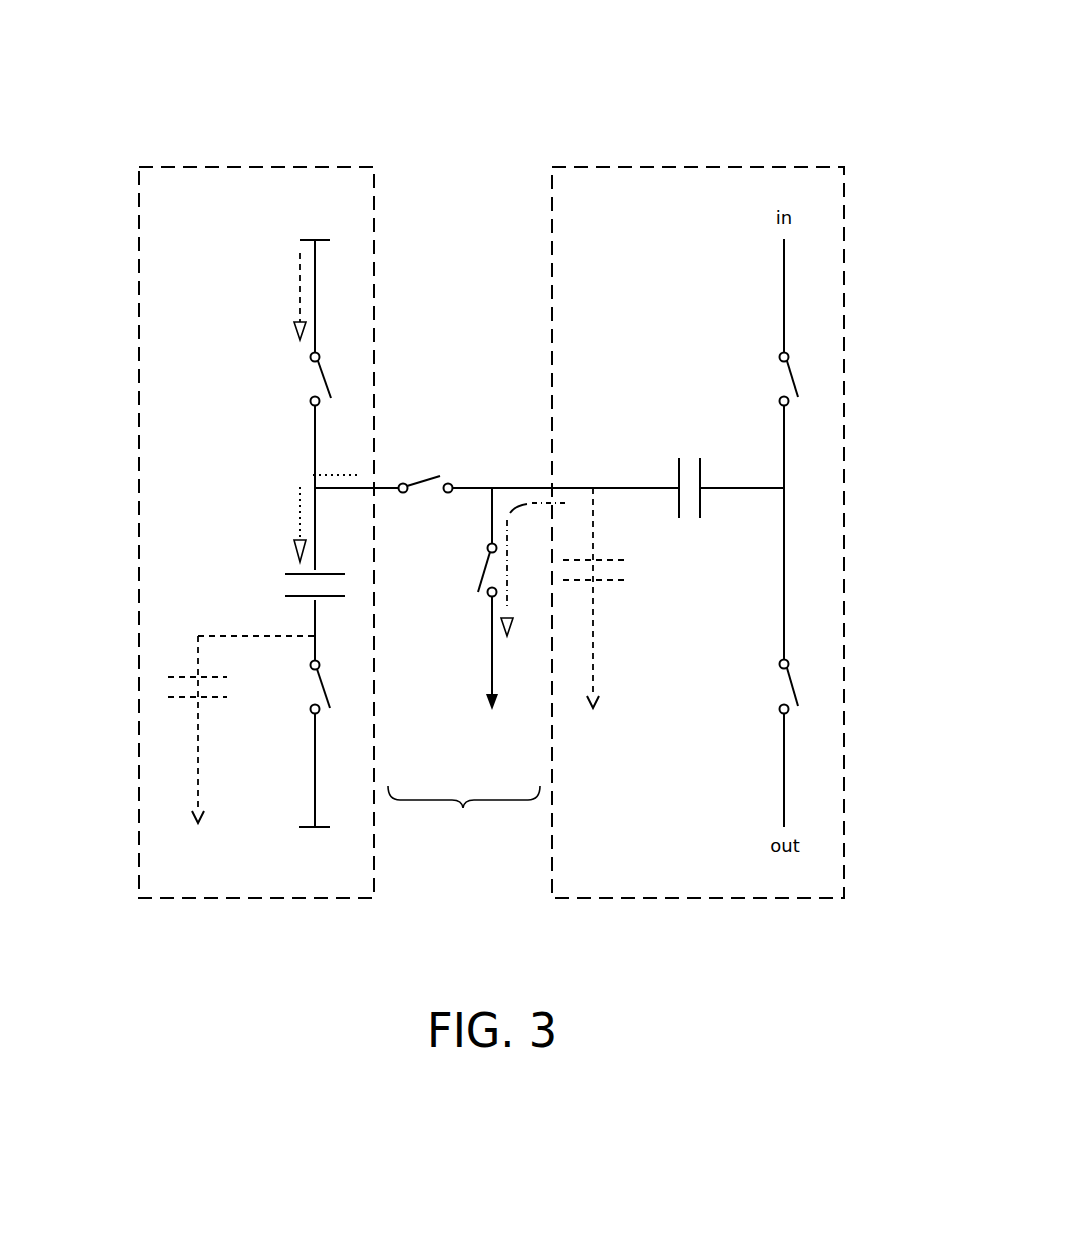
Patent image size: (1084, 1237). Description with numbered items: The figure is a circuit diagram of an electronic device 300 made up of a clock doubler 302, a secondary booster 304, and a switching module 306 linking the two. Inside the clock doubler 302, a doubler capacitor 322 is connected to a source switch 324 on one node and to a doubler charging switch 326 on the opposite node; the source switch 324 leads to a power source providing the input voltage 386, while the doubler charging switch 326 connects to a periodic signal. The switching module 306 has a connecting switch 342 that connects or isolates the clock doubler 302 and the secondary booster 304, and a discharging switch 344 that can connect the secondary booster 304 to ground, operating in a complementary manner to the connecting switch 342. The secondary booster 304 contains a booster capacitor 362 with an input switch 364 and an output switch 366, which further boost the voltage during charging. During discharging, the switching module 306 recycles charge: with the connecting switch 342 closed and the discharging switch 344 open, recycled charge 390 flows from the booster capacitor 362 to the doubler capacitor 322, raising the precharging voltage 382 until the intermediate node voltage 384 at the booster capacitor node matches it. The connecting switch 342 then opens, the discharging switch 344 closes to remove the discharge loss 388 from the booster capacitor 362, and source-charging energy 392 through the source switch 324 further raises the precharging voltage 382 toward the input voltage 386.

The electronic device 300 is at (381, 66).
The clock doubler 302 is at (160, 167).
The secondary booster 304 is at (818, 167).
The switching module 306 is at (464, 809).
The doubler capacitor 322 is at (293, 572).
The source switch 324 is at (323, 370).
The doubler charging switch 326 is at (311, 707).
The connecting switch 342 is at (440, 476).
The discharging switch 344 is at (483, 568).
The booster capacitor 362 is at (700, 466).
The input switch 364 is at (796, 382).
The output switch 366 is at (792, 678).
The precharging voltage 382 is at (370, 500).
The intermediate node voltage 384 is at (498, 468).
The input voltage 386 is at (308, 216).
The discharge loss 388 is at (538, 502).
The recycled charge 390 is at (305, 483).
The source-charging energy 392 is at (300, 253).